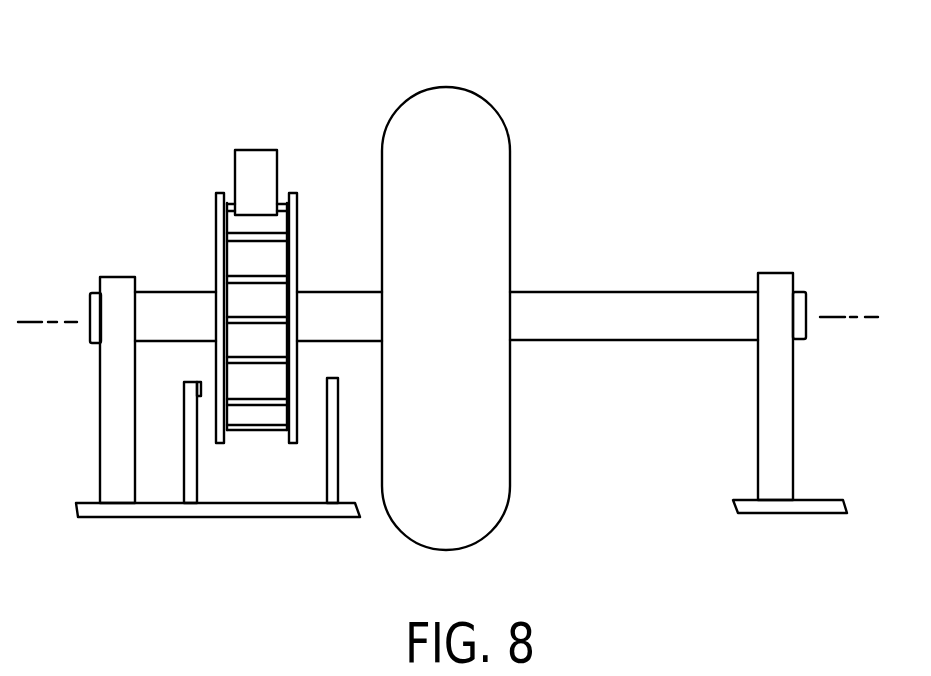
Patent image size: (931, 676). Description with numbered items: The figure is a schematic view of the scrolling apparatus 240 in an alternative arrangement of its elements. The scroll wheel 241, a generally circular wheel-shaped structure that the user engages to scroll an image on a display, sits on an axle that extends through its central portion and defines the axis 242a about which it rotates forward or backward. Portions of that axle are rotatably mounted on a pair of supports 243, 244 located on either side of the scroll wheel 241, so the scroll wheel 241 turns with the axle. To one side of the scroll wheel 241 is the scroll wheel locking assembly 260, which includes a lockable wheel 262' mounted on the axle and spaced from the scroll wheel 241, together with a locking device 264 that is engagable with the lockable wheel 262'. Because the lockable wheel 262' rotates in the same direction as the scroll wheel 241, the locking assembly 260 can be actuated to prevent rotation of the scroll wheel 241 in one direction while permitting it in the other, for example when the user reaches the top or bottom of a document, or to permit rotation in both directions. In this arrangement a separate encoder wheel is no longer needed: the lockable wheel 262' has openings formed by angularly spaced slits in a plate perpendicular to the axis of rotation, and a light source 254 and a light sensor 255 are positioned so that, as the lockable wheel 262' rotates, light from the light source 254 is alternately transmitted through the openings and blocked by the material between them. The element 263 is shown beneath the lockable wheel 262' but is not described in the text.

The scrolling apparatus 240 is at (640, 112).
The scroll wheel 241 is at (477, 107).
The axis 242a is at (847, 303).
The support 243 is at (100, 395).
The support 244 is at (778, 390).
The light source 254 is at (322, 397).
The light sensor 255 is at (190, 377).
The scroll wheel locking assembly 260 is at (204, 148).
The lockable wheel 262' is at (277, 382).
The drive chain/belt 263 is at (260, 430).
The locking device 264 is at (270, 188).